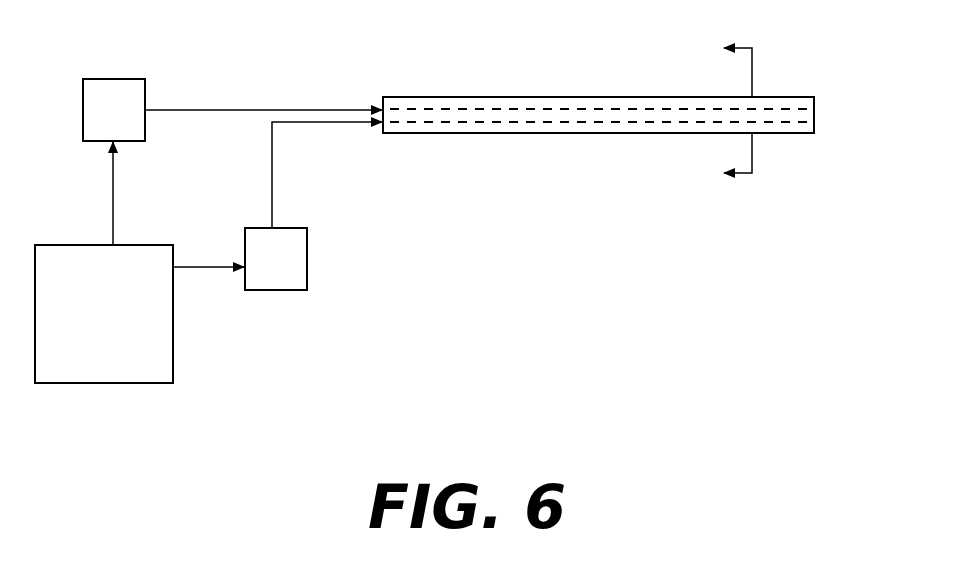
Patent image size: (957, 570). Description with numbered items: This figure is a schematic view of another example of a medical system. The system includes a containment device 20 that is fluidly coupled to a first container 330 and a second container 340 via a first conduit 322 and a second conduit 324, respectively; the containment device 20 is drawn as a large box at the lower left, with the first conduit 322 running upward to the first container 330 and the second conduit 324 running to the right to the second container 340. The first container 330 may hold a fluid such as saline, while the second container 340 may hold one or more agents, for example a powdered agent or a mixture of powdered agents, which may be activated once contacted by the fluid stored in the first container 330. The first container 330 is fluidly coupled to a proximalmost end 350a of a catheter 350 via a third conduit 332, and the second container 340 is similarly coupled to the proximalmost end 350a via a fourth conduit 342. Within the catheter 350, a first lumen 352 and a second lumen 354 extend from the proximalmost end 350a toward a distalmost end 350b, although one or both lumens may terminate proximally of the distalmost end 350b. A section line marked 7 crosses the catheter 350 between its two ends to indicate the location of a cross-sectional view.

The containment device 20 is at (91, 326).
The first conduit 322 is at (112, 182).
The second conduit 324 is at (207, 268).
The first container 330 is at (97, 122).
The third conduit 332 is at (262, 109).
The second container 340 is at (258, 270).
The fourth conduit 342 is at (271, 144).
The catheter 350 is at (589, 96).
The proximalmost end 350a is at (376, 133).
The distalmost end 350b is at (820, 127).
The first lumen 352 is at (800, 97).
The second lumen 354 is at (805, 114).
The section line for FIG. 7 is at (738, 111).